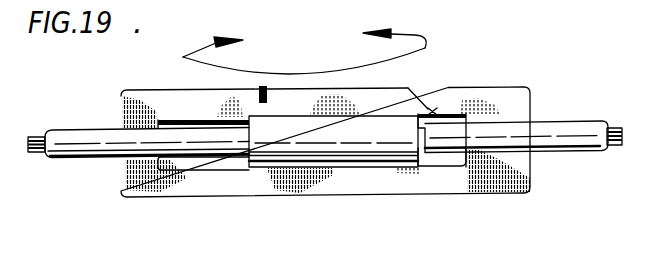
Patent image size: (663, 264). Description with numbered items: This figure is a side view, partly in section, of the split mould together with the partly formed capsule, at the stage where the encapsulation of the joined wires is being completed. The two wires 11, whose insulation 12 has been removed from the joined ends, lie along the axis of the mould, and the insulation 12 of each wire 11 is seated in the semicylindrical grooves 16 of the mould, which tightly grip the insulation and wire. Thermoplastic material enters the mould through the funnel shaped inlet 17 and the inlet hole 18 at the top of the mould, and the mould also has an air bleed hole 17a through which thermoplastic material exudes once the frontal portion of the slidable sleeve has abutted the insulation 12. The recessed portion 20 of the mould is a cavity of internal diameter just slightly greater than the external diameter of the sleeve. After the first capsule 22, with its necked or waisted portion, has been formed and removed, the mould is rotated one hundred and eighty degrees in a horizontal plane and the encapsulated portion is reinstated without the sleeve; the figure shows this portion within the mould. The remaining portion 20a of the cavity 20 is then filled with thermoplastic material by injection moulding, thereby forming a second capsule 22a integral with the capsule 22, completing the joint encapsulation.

The wires 11 is at (40, 156).
The insulation 12 is at (77, 138).
The semicylindrical grooves 16 is at (134, 127).
The funnel shaped inlet 17 is at (432, 97).
The air bleed hole 17a is at (266, 98).
The inlet hole 18 is at (436, 109).
The recessed portion 20 is at (172, 122).
The portion of the cavity 20a is at (468, 110).
The capsule 22 is at (338, 145).
The second capsule 22a is at (445, 160).